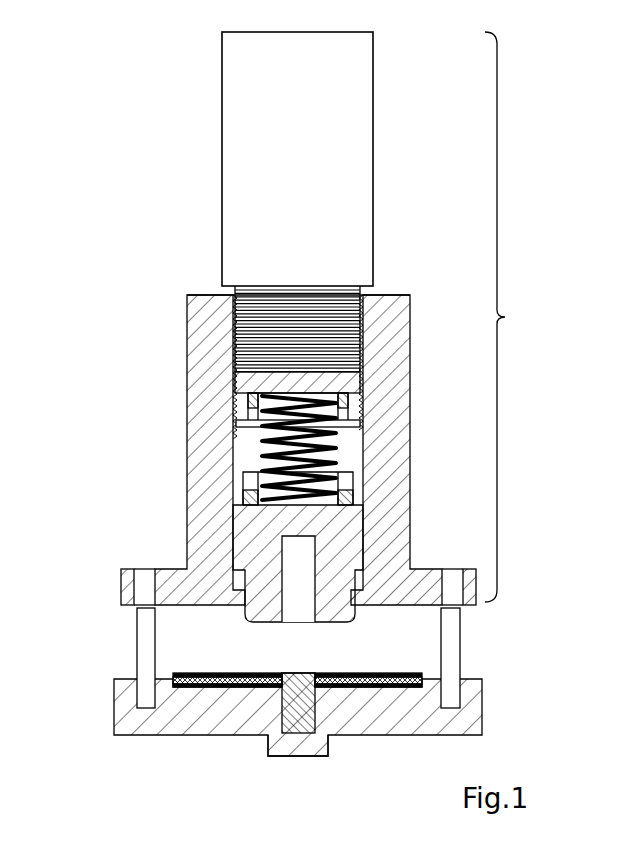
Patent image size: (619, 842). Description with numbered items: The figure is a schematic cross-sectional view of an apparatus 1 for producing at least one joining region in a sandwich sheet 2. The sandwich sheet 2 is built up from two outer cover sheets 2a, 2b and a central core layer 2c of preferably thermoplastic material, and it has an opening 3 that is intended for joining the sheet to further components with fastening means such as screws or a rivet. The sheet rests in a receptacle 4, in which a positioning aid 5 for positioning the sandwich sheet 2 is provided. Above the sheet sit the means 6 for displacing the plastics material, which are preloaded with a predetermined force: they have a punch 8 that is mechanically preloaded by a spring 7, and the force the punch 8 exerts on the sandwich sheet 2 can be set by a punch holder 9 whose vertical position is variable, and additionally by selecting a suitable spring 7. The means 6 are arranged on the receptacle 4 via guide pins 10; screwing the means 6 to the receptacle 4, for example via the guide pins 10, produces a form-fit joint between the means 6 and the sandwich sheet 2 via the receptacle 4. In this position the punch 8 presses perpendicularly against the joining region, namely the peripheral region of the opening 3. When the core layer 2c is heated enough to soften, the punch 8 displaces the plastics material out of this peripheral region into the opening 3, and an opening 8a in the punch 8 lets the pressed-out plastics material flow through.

The apparatus 1 is at (531, 198).
The sandwich sheet 2 is at (345, 708).
The outer cover sheet 2a is at (226, 672).
The outer cover sheet 2b is at (213, 692).
The core layer 2c is at (196, 672).
The opening 3 is at (302, 673).
The receptacle 4 is at (163, 718).
The positioning aid 5 is at (312, 710).
The means for displacing the plastics material 6 is at (321, 318).
The spring 7 is at (332, 456).
The punch 8 is at (350, 553).
The opening 8a is at (300, 563).
The punch holder 9 is at (358, 116).
The guide pins 10 is at (145, 627).